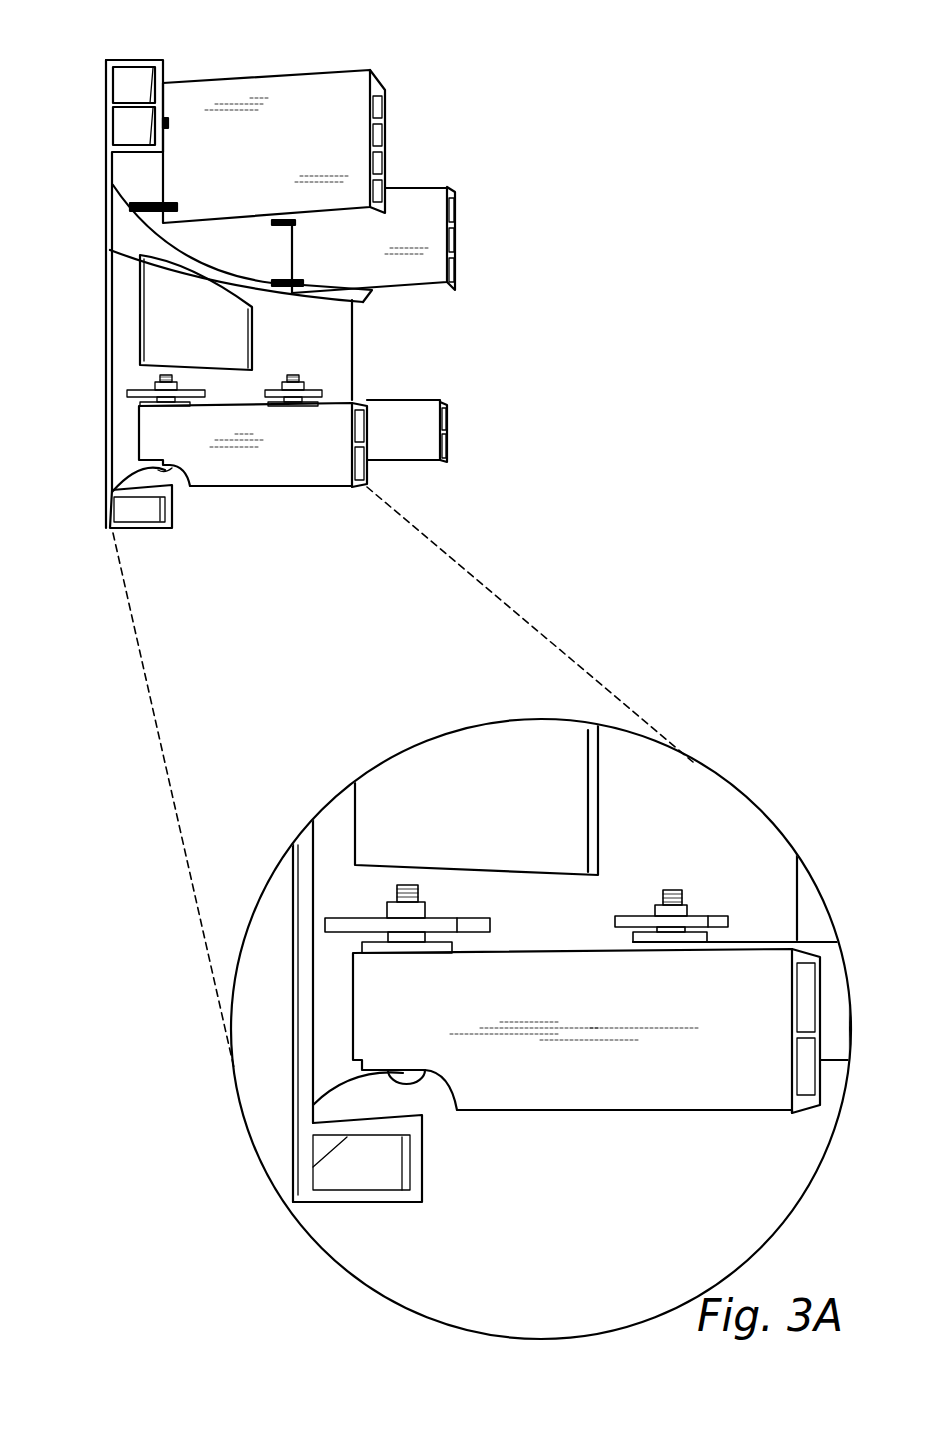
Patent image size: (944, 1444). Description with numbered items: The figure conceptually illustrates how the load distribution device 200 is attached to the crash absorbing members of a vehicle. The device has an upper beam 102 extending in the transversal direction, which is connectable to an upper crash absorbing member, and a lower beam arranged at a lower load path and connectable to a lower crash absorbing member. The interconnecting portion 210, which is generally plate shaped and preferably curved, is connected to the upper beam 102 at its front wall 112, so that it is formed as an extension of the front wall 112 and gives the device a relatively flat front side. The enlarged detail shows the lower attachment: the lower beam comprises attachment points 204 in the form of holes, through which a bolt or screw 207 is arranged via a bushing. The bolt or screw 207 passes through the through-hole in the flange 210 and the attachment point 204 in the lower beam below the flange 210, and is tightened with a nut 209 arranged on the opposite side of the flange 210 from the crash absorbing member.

The upper beam 102 is at (137, 60).
The front wall 112 is at (165, 122).
The load distribution device 200 is at (428, 337).
The flange 210 is at (345, 917).
The bolt or screw 207 is at (403, 887).
The nut 209 is at (427, 913).
The attachment point 204 is at (567, 1110).